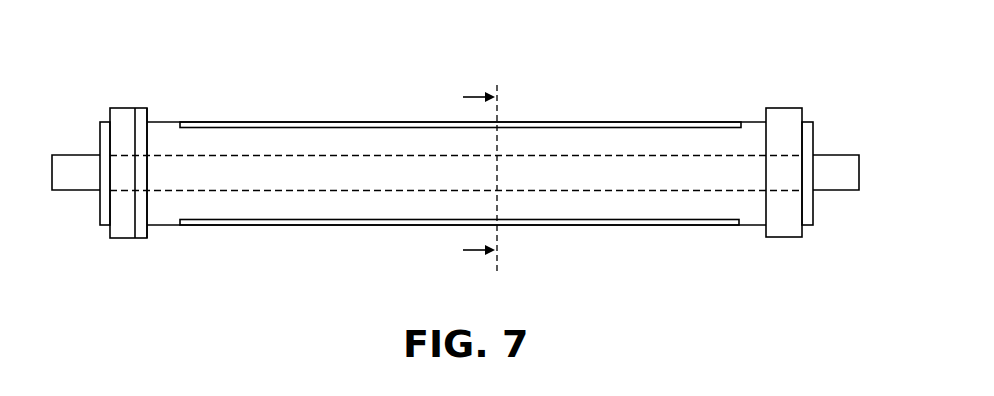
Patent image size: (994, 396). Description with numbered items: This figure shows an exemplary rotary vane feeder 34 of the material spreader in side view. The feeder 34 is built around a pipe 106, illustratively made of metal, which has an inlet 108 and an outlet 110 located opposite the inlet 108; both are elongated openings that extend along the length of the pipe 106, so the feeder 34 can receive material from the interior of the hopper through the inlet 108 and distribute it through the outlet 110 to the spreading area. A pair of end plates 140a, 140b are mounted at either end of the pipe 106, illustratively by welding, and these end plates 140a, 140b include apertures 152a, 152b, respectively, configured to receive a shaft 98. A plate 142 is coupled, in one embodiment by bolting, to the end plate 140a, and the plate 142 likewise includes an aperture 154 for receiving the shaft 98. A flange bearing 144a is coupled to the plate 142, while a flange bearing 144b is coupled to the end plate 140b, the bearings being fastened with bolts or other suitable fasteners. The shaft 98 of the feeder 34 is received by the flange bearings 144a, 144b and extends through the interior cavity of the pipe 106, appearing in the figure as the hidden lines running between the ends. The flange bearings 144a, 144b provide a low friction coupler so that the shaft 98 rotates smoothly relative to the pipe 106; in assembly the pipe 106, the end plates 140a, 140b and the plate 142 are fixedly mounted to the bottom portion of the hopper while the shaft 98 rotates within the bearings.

The feeder 34 is at (249, 66).
The shaft 98 is at (67, 158).
The flange bearing 144a is at (105, 123).
The flange bearing 144b is at (807, 128).
The plate 142 is at (123, 228).
The aperture 154 is at (125, 157).
The aperture 152a is at (138, 150).
The aperture 152b is at (776, 192).
The end plate 140a is at (143, 230).
The end plate 140b is at (775, 113).
The inlet 108 is at (354, 125).
The outlet 110 is at (303, 222).
The pipe 106 is at (704, 207).